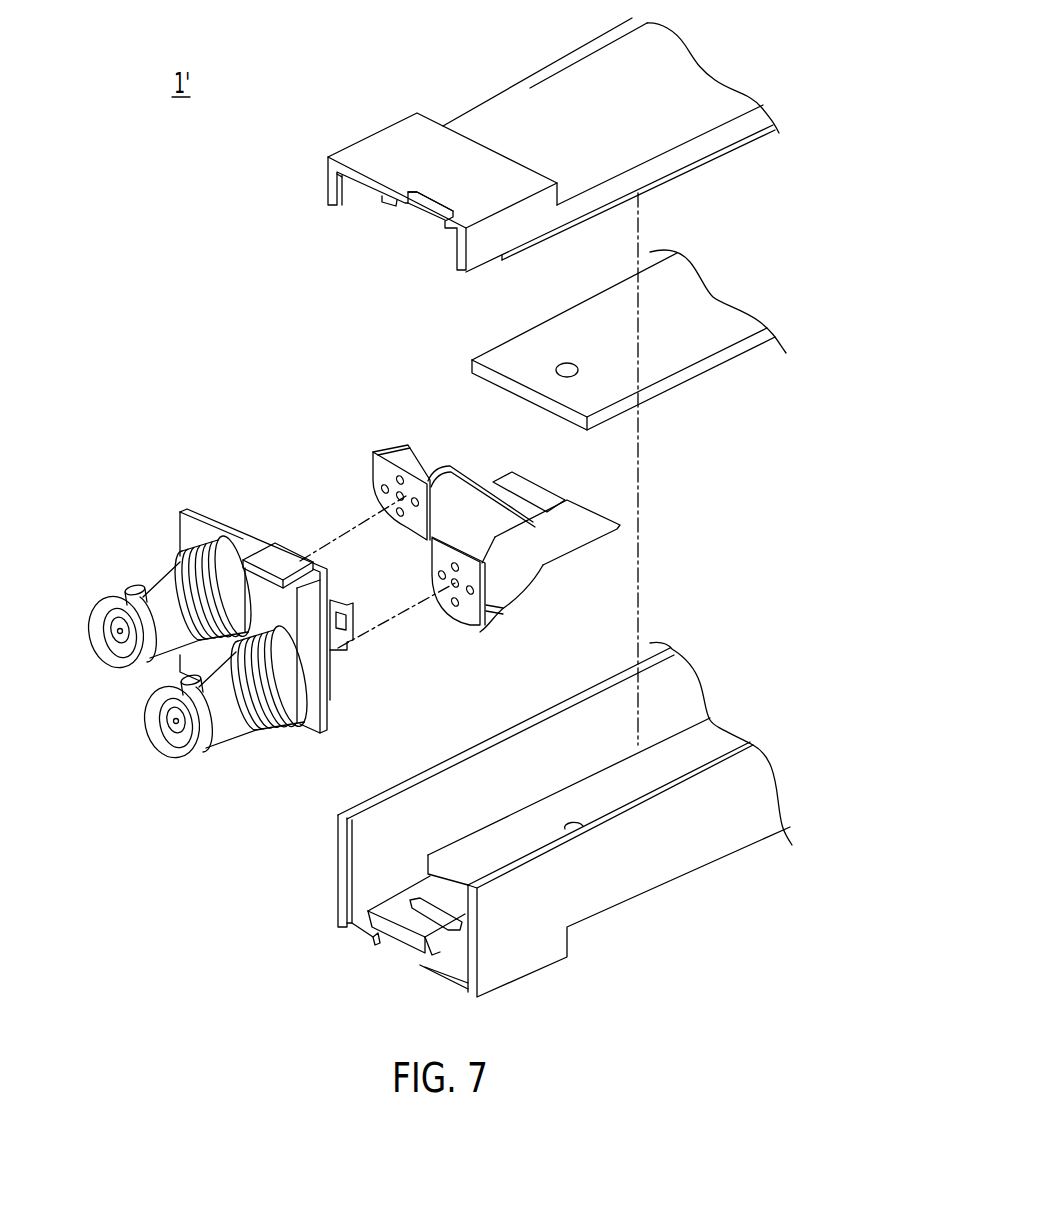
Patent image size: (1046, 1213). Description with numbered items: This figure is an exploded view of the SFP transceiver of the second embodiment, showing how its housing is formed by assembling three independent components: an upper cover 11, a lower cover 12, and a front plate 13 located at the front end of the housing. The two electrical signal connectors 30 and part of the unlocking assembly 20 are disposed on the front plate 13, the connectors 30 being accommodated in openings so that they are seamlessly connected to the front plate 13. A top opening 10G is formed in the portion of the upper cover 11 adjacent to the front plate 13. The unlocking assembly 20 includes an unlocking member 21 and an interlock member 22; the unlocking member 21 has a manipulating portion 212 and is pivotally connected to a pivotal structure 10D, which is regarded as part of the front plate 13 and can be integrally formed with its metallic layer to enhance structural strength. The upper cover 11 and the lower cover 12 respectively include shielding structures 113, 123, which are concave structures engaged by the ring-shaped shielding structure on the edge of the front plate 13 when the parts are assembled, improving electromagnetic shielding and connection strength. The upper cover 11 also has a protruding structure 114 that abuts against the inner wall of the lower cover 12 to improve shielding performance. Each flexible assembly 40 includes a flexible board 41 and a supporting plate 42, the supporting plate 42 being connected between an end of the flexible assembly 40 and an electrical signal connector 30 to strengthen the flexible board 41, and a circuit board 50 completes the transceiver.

The top opening 10G is at (428, 201).
The pivotal structure 10D is at (360, 627).
The upper cover 11 is at (553, 160).
The shielding structure 113 is at (345, 197).
The protruding structure 114 is at (520, 243).
The lower cover 12 is at (565, 838).
The shielding structure 123 is at (377, 948).
The front plate 13 is at (303, 723).
The unlocking assembly 20 is at (223, 886).
The unlocking member 21 is at (309, 603).
The manipulating portion 212 is at (282, 560).
The interlock member 22 is at (407, 942).
The electrical signal connector 30 is at (167, 583).
The flexible assembly 40 is at (496, 528).
The flexible board 41 is at (517, 582).
The supporting plate 42 is at (472, 612).
The circuit board 50 is at (677, 357).